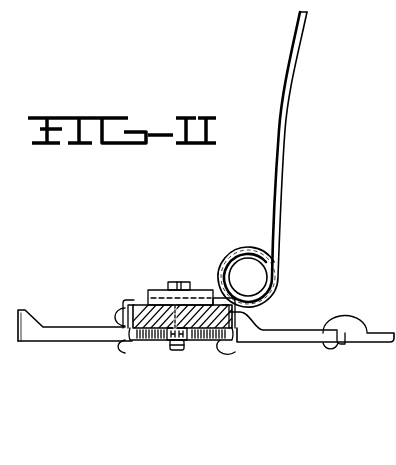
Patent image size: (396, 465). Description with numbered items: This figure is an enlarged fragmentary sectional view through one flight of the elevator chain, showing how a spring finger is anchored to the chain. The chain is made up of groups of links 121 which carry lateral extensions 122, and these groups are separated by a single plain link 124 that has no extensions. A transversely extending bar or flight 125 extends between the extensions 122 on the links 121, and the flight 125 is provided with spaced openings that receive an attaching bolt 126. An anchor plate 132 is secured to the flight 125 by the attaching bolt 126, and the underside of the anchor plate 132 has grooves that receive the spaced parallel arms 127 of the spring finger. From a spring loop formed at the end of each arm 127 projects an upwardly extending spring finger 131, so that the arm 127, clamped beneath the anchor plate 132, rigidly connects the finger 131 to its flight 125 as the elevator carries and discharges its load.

The link 121 is at (107, 323).
The lateral extension 122 is at (152, 363).
The plain link 124 is at (28, 332).
The flight 125 is at (139, 301).
The attaching bolt 126 is at (178, 281).
The arm 127 is at (221, 299).
The spring finger 131 is at (287, 127).
The anchor plate 132 is at (157, 292).